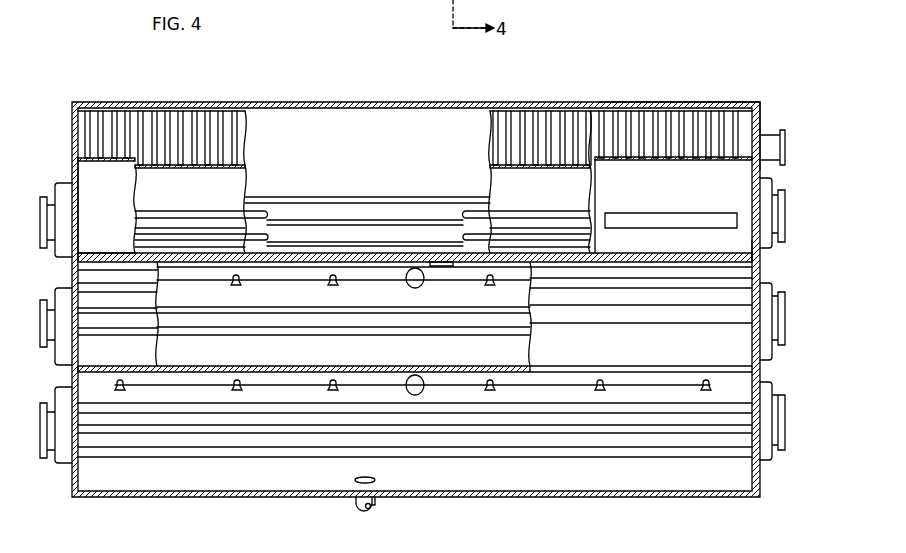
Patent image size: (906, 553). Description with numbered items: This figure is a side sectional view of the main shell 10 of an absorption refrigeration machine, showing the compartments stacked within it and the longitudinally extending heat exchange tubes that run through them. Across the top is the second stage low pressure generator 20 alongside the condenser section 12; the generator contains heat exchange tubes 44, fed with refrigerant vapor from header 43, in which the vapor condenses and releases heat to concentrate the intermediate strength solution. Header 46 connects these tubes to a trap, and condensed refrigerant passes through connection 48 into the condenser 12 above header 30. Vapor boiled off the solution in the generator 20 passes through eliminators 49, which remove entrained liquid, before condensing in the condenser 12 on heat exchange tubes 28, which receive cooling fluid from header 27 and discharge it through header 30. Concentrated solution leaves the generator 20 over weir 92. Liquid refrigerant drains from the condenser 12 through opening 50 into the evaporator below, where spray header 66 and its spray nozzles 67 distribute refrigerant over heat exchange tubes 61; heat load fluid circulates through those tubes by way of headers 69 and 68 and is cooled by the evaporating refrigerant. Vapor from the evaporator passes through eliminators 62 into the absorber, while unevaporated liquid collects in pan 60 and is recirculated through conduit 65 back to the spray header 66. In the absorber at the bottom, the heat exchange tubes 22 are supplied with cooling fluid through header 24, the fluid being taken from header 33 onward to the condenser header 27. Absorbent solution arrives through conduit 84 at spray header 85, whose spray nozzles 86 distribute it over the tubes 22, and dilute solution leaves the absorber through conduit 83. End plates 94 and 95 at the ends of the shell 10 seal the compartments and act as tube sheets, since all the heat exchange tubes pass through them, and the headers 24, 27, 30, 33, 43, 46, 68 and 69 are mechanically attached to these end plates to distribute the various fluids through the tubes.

The shell 10 is at (456, 96).
The condenser section 12 is at (315, 148).
The second stage low pressure generator 20 is at (148, 197).
The heat exchange tubes 22 is at (198, 457).
The header 24 is at (768, 458).
The header 27 is at (62, 258).
The heat exchange tubes 28 is at (383, 201).
The header 30 is at (768, 250).
The header 33 is at (60, 465).
The header 43 is at (56, 200).
The heat exchange tubes 44 is at (201, 210).
The header 46 is at (768, 191).
The connection 48 is at (786, 148).
The eliminators 49 is at (157, 130).
The opening 50 is at (447, 267).
The pan 60 is at (605, 357).
The heat exchange tubes 61 is at (173, 332).
The eliminators 62 is at (660, 298).
The conduit 65 is at (408, 283).
The spray header 66 is at (303, 281).
The spray nozzles 67 is at (233, 284).
The header 68 is at (772, 348).
The header 69 is at (62, 357).
The conduit 83 is at (358, 497).
The conduit 84 is at (413, 375).
The spray header 85 is at (443, 383).
The spray nozzles 86 is at (298, 388).
The weir 92 is at (650, 222).
The end plate 94 is at (760, 102).
The end plate 95 is at (72, 117).